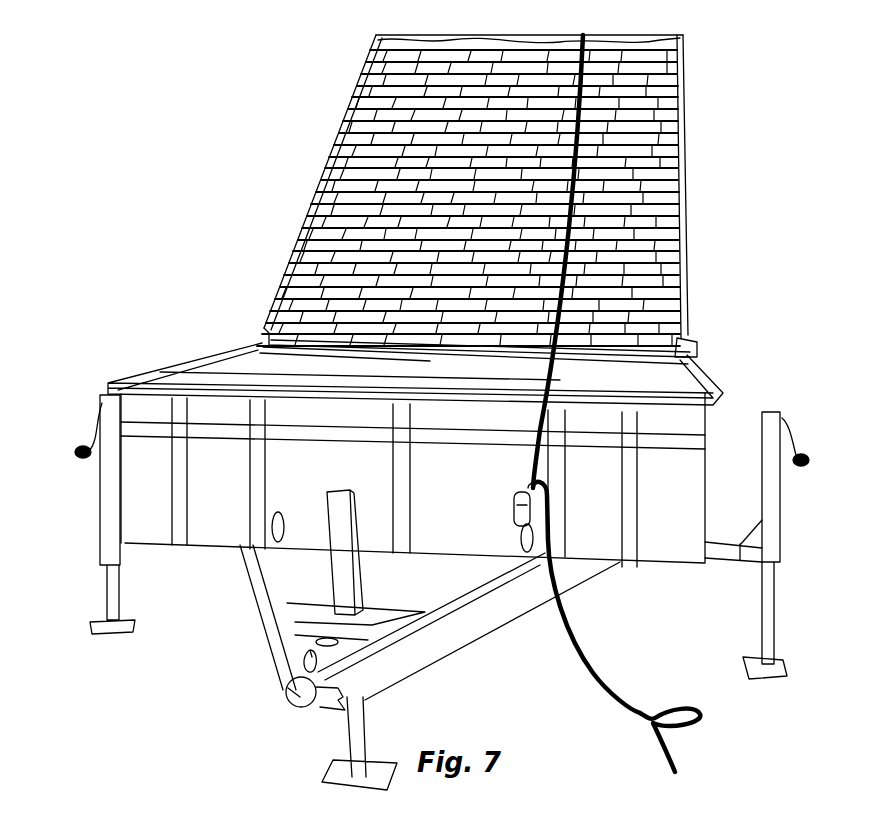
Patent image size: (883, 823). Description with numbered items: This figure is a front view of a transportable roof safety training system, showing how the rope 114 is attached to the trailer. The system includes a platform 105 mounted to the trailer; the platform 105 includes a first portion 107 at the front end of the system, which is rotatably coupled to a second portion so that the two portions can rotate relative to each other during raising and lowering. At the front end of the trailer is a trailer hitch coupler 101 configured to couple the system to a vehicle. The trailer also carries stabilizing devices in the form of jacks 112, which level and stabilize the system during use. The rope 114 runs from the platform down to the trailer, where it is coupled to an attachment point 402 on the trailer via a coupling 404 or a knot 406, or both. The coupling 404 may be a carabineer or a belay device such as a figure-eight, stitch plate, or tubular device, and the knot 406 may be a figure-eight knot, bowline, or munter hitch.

The platform 105 is at (688, 168).
The first portion 107 is at (668, 262).
The jack 112 is at (782, 533).
The rope 114 is at (592, 668).
The trailer hitch coupler 101 is at (290, 696).
The attachment point 402 is at (520, 545).
The coupling 404 is at (515, 515).
The knot 406 is at (522, 497).